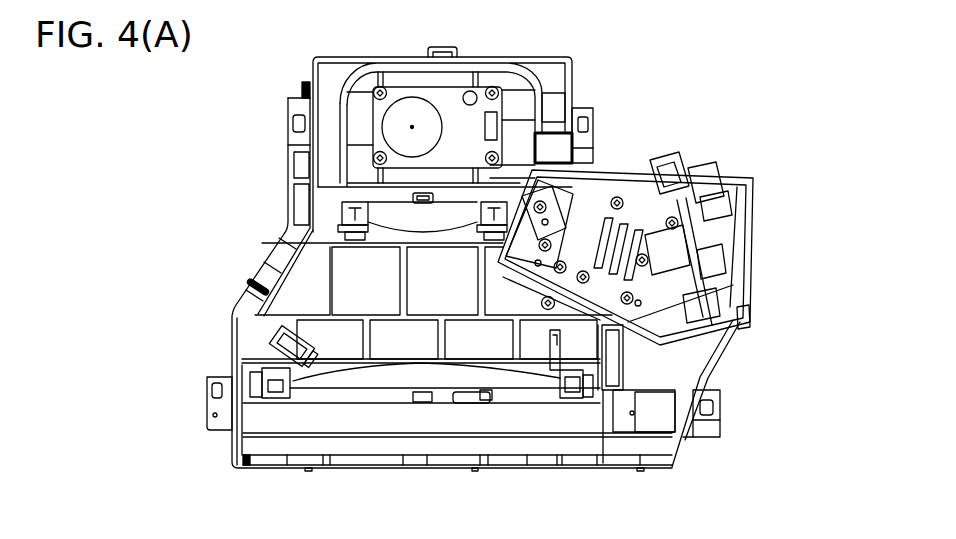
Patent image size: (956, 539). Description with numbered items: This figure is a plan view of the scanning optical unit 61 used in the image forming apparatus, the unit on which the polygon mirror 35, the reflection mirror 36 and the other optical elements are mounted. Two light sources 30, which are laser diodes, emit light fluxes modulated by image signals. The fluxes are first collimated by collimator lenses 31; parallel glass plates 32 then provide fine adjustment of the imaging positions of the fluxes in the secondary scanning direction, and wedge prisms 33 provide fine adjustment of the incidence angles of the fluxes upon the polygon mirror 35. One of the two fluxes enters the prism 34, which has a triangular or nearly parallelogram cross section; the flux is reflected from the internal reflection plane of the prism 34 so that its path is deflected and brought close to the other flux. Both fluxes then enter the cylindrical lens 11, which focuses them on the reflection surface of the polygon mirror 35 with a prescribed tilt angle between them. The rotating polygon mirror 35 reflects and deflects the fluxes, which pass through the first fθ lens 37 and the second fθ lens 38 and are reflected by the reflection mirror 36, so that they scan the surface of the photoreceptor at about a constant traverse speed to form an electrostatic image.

The cylindrical lens 11 is at (582, 176).
The light sources 30 is at (718, 294).
The collimator lenses 31 is at (745, 180).
The parallel glass plates 32 is at (667, 163).
The wedge prisms 33 is at (572, 250).
The prism 34 is at (552, 256).
The polygon mirror 35 is at (392, 104).
The reflection mirror 36 is at (541, 422).
The first fθ lens 37 is at (405, 222).
The second fθ lens 38 is at (337, 378).
The scanning optical unit 61 is at (185, 148).